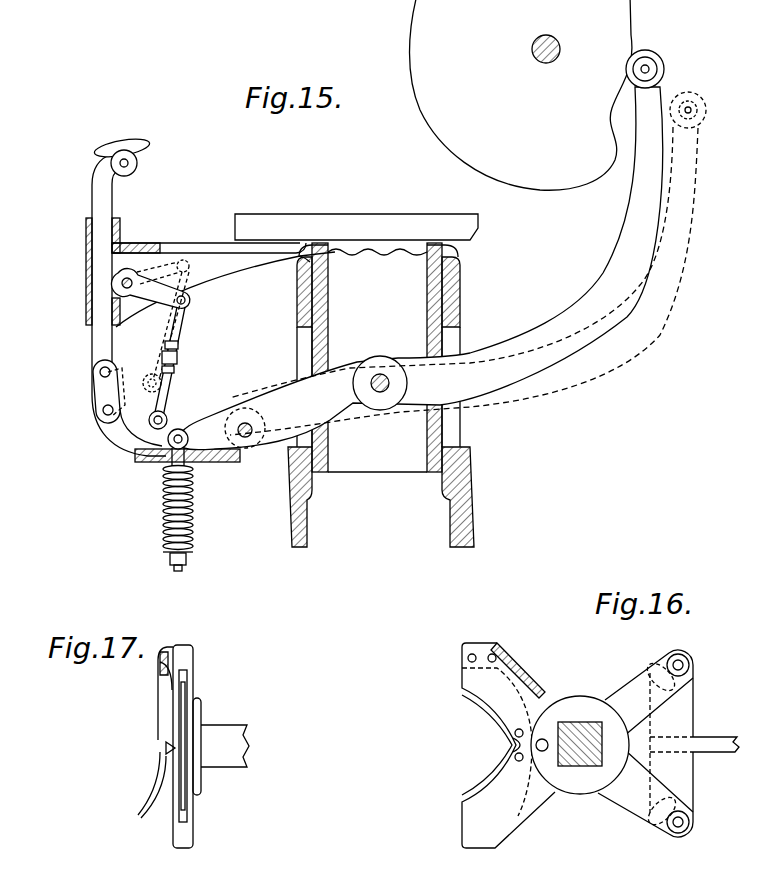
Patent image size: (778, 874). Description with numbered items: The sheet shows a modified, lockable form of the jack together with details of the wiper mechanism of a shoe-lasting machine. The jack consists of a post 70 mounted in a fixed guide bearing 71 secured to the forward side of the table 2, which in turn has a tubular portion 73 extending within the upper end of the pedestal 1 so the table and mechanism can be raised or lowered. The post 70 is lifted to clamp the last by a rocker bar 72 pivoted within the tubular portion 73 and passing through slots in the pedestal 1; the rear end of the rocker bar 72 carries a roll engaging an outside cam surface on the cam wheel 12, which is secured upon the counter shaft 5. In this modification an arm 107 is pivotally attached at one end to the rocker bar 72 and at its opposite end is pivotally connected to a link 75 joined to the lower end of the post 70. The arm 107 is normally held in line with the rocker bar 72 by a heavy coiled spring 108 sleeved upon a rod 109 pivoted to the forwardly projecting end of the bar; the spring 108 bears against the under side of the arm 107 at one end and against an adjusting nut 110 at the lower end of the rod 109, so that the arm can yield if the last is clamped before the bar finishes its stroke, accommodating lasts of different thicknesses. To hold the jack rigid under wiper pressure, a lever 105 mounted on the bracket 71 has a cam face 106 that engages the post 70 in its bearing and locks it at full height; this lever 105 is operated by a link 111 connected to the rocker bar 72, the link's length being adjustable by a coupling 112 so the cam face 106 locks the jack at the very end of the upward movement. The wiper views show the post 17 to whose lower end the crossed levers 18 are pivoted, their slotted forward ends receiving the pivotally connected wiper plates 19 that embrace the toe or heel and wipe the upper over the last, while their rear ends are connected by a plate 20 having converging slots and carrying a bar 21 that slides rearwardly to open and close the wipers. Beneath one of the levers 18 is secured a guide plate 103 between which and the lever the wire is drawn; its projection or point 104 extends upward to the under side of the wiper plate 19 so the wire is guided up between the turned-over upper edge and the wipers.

In FIG. 15, the pedestal 1 is at (472, 508).
In FIG. 15, the table 2 is at (338, 213).
In FIG. 15, the cam shaft 5 is at (546, 63).
In FIG. 15, the cam wheel 12 is at (552, 182).
In FIG. 16, the post 17 is at (578, 722).
In FIG. 17, the post 17 is at (250, 747).
In FIG. 16, the crossed levers 18 is at (538, 694).
In FIG. 17, the crossed levers 18 is at (188, 654).
In FIG. 16, the wiper plates 19 is at (505, 732).
In FIG. 17, the wiper plates 19 is at (184, 683).
In FIG. 16, the plate 20 is at (690, 708).
In FIG. 16, the bar 21 is at (727, 753).
In FIG. 15, the post 70 is at (96, 352).
In FIG. 15, the guide bearing 71 is at (170, 242).
In FIG. 15, the rocker bar 72 is at (612, 278).
In FIG. 15, the tubular portion 73 is at (320, 305).
In FIG. 15, the link 75 is at (96, 390).
In FIG. 16, the guide plate 103 is at (522, 663).
In FIG. 17, the guide plate 103 is at (157, 703).
In FIG. 17, the projection or point 104 is at (166, 749).
In FIG. 15, the lever 105 is at (168, 292).
In FIG. 15, the cam face 106 is at (118, 275).
In FIG. 15, the arm 107 is at (112, 440).
In FIG. 15, the coiled spring 108 is at (192, 508).
In FIG. 15, the rod 109 is at (190, 562).
In FIG. 15, the adjusting nut 110 is at (165, 560).
In FIG. 15, the link 111 is at (186, 325).
In FIG. 15, the coupling 112 is at (184, 352).